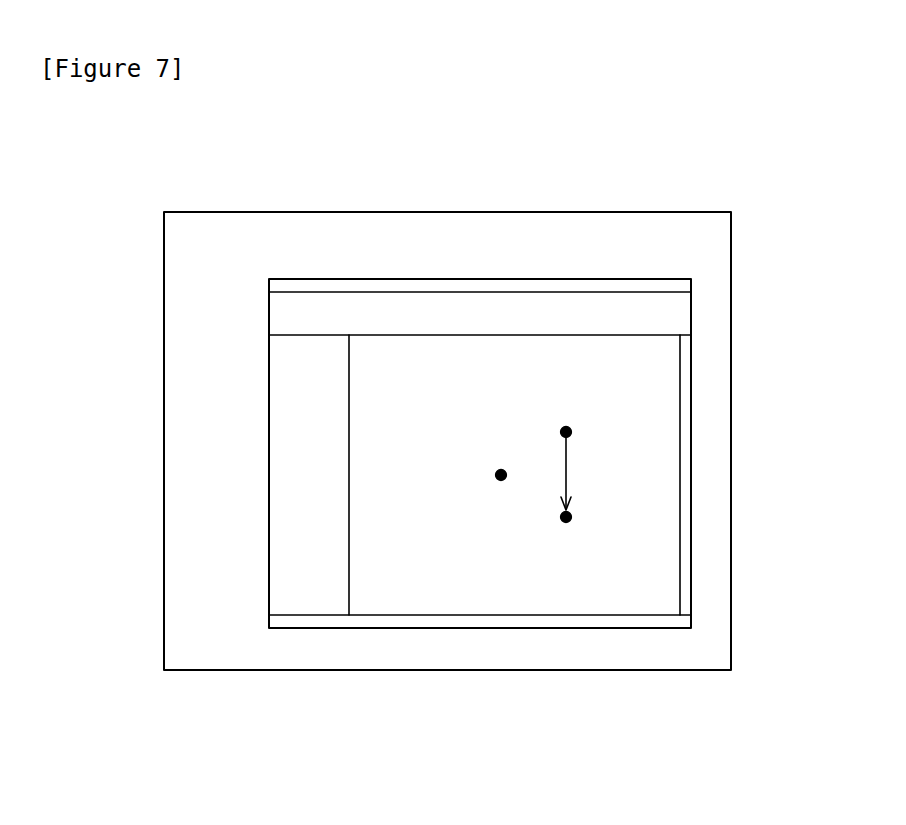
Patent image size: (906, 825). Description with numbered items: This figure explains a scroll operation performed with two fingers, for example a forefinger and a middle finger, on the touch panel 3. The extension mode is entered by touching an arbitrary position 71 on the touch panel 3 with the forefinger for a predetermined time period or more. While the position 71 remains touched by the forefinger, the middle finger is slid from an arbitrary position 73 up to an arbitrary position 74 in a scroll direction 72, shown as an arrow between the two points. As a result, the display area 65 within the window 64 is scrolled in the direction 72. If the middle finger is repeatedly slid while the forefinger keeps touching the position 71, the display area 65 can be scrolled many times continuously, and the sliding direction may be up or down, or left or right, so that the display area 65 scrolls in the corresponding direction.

The touch panel 3 is at (567, 212).
The window 64 is at (388, 279).
The display area 65 is at (440, 428).
The arbitrary position 71 is at (502, 481).
The scroll direction 72 is at (567, 475).
The arbitrary position 73 is at (572, 432).
The arbitrary position 74 is at (572, 517).